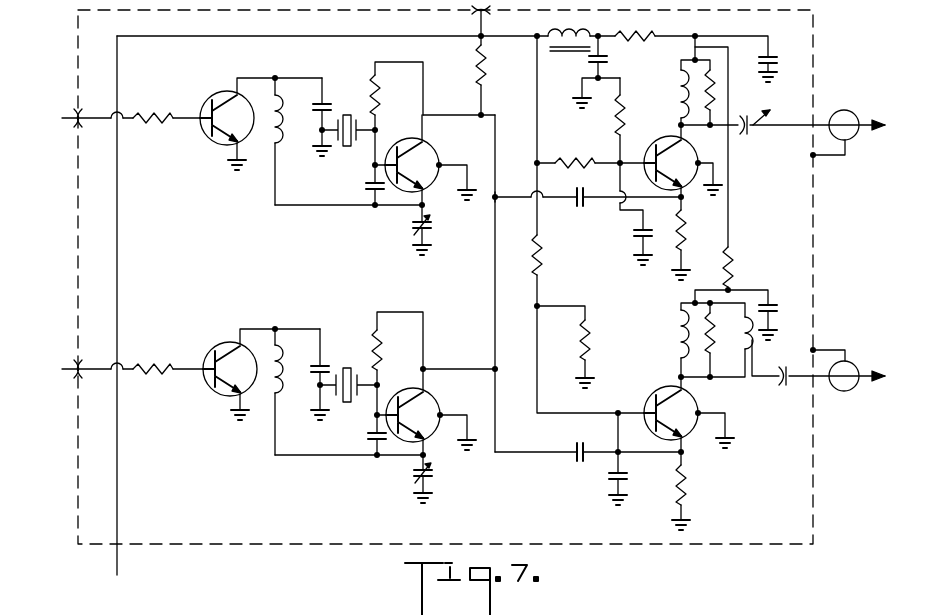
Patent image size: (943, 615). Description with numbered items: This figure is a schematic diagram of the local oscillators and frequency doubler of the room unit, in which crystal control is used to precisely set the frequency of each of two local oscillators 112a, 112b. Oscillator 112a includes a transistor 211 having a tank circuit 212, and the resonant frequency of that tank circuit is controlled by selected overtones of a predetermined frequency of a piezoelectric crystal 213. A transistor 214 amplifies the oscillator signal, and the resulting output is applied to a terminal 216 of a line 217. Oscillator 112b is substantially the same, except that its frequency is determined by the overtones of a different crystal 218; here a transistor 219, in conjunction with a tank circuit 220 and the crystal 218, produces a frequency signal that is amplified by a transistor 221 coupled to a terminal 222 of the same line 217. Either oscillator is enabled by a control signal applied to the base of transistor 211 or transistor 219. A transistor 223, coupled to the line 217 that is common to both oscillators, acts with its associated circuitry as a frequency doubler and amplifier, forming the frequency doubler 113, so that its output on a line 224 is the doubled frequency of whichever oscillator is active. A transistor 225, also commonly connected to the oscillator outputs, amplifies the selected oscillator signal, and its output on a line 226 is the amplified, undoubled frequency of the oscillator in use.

The local oscillator 112a is at (322, 222).
The local oscillator 112b is at (318, 470).
The frequency doubler 113 is at (744, 149).
The transistor 211 is at (212, 102).
The tank circuit 212 is at (310, 76).
The crystal 213 is at (342, 153).
The transistor 214 is at (437, 152).
The terminal 216 is at (495, 199).
The line 217 is at (495, 293).
The crystal 218 is at (343, 343).
The transistor 219 is at (213, 342).
The tank circuit 220 is at (297, 325).
The transistor 221 is at (438, 409).
The terminal 222 is at (493, 367).
The transistor 223 is at (655, 142).
The line 224 is at (829, 112).
The transistor 225 is at (656, 390).
The line 226 is at (868, 360).